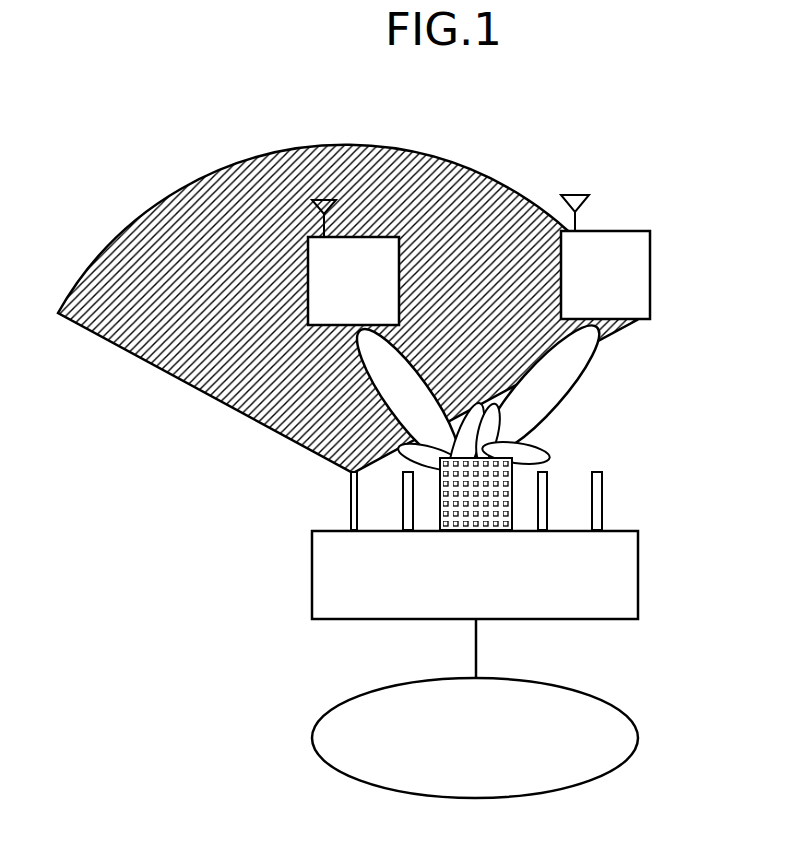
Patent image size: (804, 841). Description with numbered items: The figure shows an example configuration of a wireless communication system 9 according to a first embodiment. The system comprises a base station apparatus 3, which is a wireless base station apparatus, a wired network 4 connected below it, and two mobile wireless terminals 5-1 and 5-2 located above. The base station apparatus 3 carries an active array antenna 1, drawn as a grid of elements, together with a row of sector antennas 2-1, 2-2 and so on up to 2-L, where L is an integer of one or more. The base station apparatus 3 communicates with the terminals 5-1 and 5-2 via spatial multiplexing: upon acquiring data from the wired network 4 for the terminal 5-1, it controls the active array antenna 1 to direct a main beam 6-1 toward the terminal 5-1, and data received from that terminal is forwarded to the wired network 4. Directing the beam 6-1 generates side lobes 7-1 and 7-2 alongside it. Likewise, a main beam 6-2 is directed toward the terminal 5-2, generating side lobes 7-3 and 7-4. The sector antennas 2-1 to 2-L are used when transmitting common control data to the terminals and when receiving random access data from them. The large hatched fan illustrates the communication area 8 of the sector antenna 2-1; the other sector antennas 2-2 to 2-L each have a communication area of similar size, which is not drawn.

The active array antenna 1 is at (513, 458).
The sector antenna 2-1 is at (350, 502).
The sector antenna 2-2 is at (403, 526).
The sector antenna 2-L is at (598, 472).
The base station apparatus 3 is at (653, 473).
The wired network 4 is at (638, 740).
The terminal 5-1 is at (354, 237).
The terminal 5-2 is at (607, 231).
The beam 6-1 is at (388, 405).
The beam 6-2 is at (600, 350).
The side lobe 7-1 is at (398, 450).
The side lobe 7-2 is at (455, 486).
The side lobe 7-3 is at (498, 437).
The side lobe 7-4 is at (548, 450).
The communication area 8 is at (356, 157).
The wireless communication system 9 is at (692, 165).